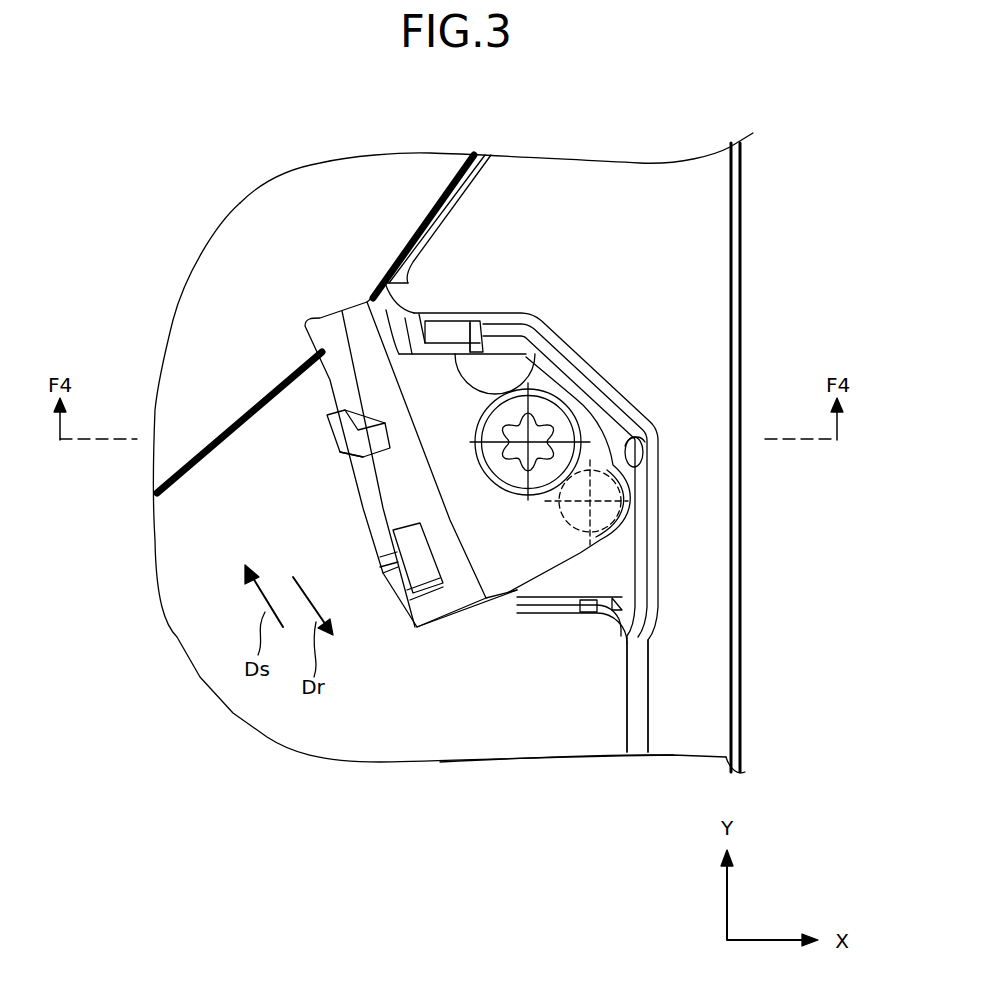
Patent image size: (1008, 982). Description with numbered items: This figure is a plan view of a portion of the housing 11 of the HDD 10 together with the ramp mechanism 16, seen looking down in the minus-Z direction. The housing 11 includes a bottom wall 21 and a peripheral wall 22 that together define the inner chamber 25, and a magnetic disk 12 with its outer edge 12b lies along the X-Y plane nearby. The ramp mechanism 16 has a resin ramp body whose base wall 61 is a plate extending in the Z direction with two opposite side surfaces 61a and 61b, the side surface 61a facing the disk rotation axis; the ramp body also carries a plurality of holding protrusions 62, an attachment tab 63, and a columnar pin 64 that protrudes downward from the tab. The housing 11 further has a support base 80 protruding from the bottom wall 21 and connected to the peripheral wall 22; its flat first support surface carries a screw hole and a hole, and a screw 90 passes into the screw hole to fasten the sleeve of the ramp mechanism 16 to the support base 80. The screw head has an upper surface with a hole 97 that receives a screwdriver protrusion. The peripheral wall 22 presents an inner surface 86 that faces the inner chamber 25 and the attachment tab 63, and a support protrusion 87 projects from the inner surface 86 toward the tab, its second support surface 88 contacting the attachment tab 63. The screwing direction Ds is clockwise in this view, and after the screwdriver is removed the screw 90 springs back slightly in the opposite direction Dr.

The HDD 10 is at (236, 128).
The housing 11 is at (655, 181).
The magnetic disk 12 is at (396, 158).
The outer edge 12b is at (160, 493).
The ramp load mechanism 16 is at (431, 625).
The bottom wall 21 is at (523, 738).
The peripheral wall 22 is at (713, 692).
The inner chamber 25 is at (578, 737).
The base wall 61 is at (353, 308).
The side surface 61a is at (343, 323).
The side surface 61b is at (373, 307).
The holding protrusion 62 is at (338, 371).
The attachment tab 63 is at (502, 577).
The pin 64 is at (587, 547).
The support base 80 is at (613, 578).
The inner surface 86 is at (640, 423).
The support protrusion 87 is at (515, 317).
The second support surface 88 is at (541, 325).
The screw 90 is at (535, 409).
The hole 97 is at (560, 347).